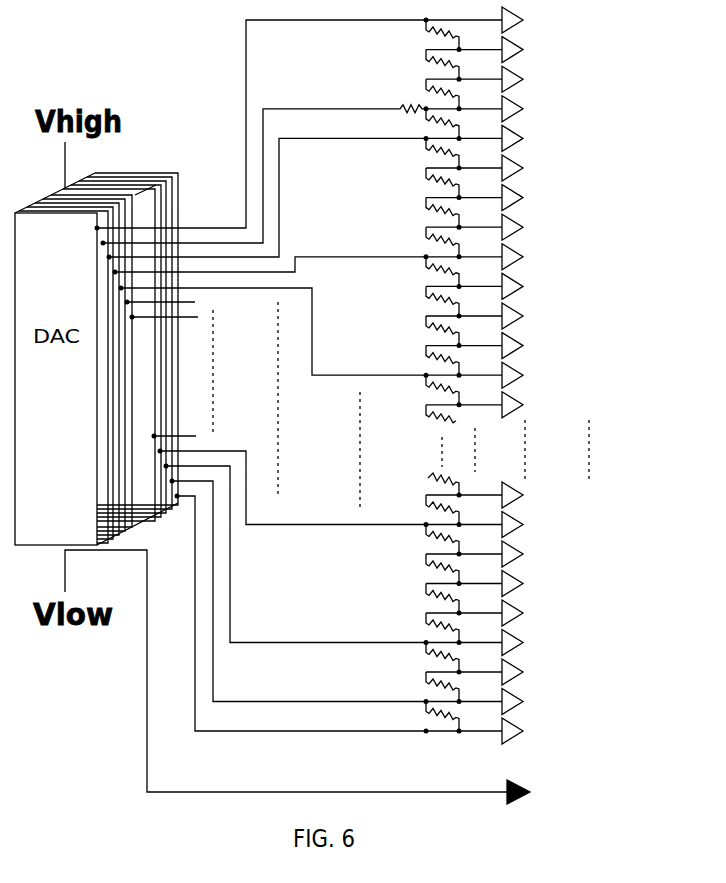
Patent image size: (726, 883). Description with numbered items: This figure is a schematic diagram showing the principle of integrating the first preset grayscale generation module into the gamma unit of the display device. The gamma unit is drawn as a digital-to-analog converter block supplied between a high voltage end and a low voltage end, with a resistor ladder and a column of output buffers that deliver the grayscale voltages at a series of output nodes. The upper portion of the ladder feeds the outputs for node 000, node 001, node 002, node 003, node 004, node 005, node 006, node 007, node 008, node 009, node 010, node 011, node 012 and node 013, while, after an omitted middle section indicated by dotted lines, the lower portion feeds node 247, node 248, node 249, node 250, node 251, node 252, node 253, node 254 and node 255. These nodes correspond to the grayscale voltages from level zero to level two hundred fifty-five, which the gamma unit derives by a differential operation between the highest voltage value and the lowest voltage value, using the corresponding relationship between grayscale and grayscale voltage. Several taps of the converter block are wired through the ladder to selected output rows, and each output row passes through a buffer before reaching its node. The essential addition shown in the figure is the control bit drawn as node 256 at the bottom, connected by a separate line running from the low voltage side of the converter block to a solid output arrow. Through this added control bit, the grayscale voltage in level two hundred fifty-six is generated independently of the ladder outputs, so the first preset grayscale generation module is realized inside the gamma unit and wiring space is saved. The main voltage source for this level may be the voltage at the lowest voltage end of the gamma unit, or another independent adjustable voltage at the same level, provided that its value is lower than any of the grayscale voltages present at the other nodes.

The output buffer node000 000 is at (526, 28).
The output buffer node001 001 is at (526, 58).
The output buffer node002 002 is at (526, 87).
The output buffer node003 003 is at (526, 117).
The output buffer node004 004 is at (526, 146).
The output buffer node005 005 is at (526, 176).
The output buffer node006 006 is at (526, 206).
The output buffer node007 007 is at (526, 235).
The output buffer node008 008 is at (526, 265).
The output buffer node009 009 is at (526, 294).
The output buffer node010 010 is at (526, 324).
The output buffer node011 011 is at (526, 354).
The output buffer node012 012 is at (526, 383).
The output buffer node013 013 is at (526, 407).
The output buffer node247 247 is at (526, 499).
The output buffer node248 248 is at (526, 533).
The output buffer node249 249 is at (526, 562).
The output buffer node250 250 is at (526, 592).
The output buffer node251 251 is at (526, 621).
The output buffer node252 252 is at (526, 651).
The output buffer node253 253 is at (526, 680).
The output buffer node254 254 is at (526, 710).
The output buffer node255 255 is at (526, 731).
The node 256 is at (530, 792).